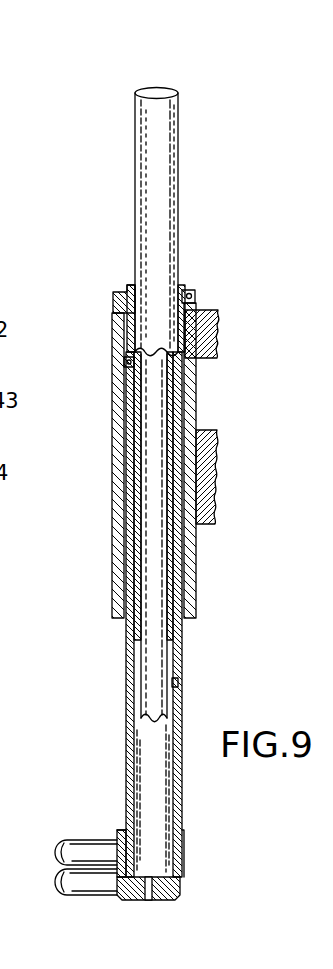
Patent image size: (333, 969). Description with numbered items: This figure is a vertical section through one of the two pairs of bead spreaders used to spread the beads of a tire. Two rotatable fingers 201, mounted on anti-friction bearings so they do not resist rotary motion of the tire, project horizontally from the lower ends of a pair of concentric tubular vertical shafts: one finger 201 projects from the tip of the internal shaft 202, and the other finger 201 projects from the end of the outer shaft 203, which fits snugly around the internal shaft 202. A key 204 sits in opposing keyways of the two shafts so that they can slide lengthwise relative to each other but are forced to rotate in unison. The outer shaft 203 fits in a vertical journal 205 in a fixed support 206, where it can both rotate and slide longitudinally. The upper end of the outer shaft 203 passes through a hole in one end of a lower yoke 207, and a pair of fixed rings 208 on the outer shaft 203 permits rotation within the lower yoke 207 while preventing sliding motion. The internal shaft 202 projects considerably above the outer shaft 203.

The rotatable fingers 201 is at (84, 847).
The internal shaft 202 is at (162, 168).
The outer shaft 203 is at (178, 711).
The key 204 is at (179, 682).
The vertical journal 205 is at (121, 373).
The fixed support 206 is at (113, 523).
The lower yoke 207 is at (207, 321).
The fixed rings 208 is at (116, 294).